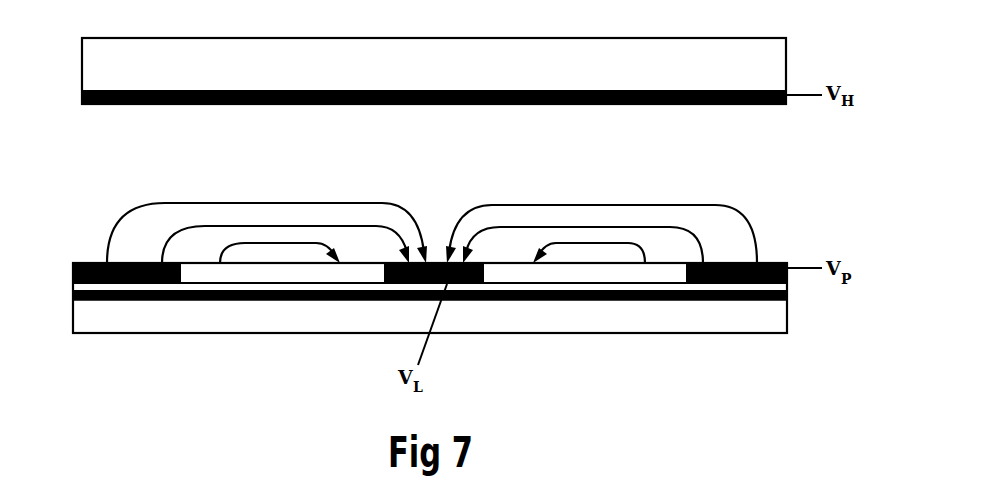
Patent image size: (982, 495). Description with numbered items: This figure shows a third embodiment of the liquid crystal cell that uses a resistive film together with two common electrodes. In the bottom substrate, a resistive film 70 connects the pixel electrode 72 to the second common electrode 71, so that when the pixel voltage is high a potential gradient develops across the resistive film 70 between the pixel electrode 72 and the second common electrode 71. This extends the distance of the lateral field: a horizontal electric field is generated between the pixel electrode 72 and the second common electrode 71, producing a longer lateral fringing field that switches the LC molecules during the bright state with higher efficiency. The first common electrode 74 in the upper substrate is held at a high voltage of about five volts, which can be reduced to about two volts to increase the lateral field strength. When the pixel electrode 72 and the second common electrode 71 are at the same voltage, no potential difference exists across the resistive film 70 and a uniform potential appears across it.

The resistive film 70 is at (283, 283).
The second common electrode 71 is at (437, 263).
The pixel electrode 72 is at (88, 263).
The first common electrode 74 is at (81, 104).